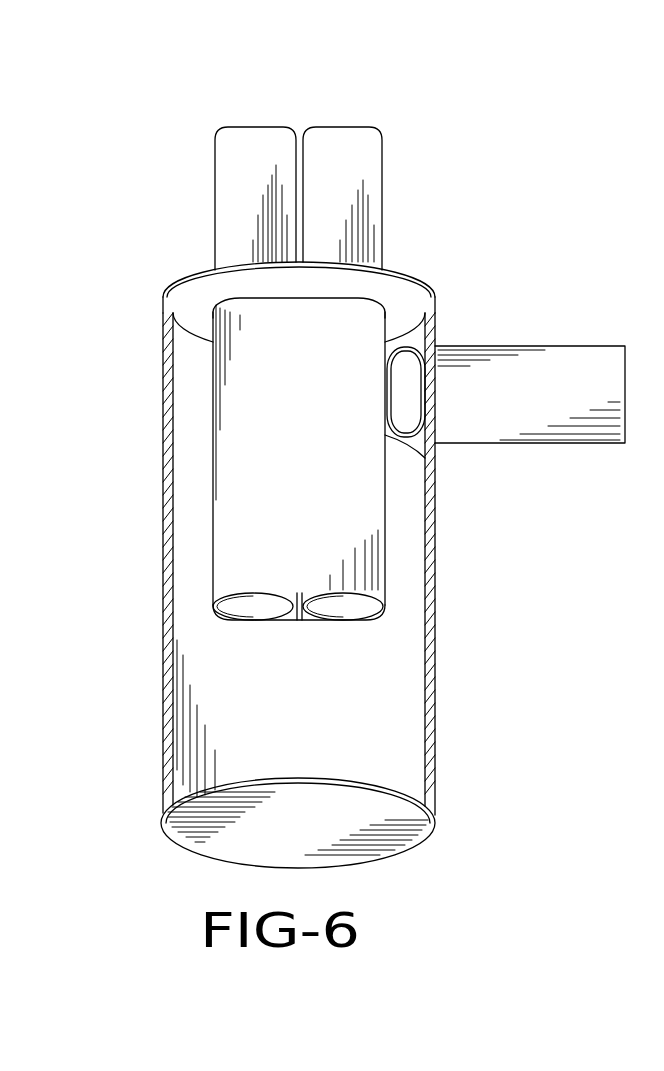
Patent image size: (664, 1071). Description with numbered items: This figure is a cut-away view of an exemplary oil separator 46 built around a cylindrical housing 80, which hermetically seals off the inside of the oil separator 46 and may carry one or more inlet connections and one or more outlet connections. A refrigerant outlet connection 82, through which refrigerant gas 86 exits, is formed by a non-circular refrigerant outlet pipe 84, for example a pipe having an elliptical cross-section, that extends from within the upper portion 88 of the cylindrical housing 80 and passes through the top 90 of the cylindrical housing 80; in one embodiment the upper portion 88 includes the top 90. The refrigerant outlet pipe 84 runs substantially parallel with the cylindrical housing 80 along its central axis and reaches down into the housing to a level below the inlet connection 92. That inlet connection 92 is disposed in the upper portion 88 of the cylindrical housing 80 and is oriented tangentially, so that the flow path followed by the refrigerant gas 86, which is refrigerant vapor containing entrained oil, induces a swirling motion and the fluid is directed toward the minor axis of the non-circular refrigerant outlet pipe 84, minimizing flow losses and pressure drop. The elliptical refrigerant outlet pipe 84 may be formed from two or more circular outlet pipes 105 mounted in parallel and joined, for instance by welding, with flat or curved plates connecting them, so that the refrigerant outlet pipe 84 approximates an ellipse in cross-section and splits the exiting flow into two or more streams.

The oil separator 46 is at (72, 290).
The cylindrical housing 80 is at (433, 713).
The refrigerant outlet connection 82 is at (376, 297).
The refrigerant outlet pipe 84 is at (213, 538).
The refrigerant gas 86 is at (183, 72).
The upper portion 88 is at (165, 423).
The top 90 is at (188, 300).
The inlet connection 92 is at (397, 437).
The circular outlet pipes 105 is at (247, 603).